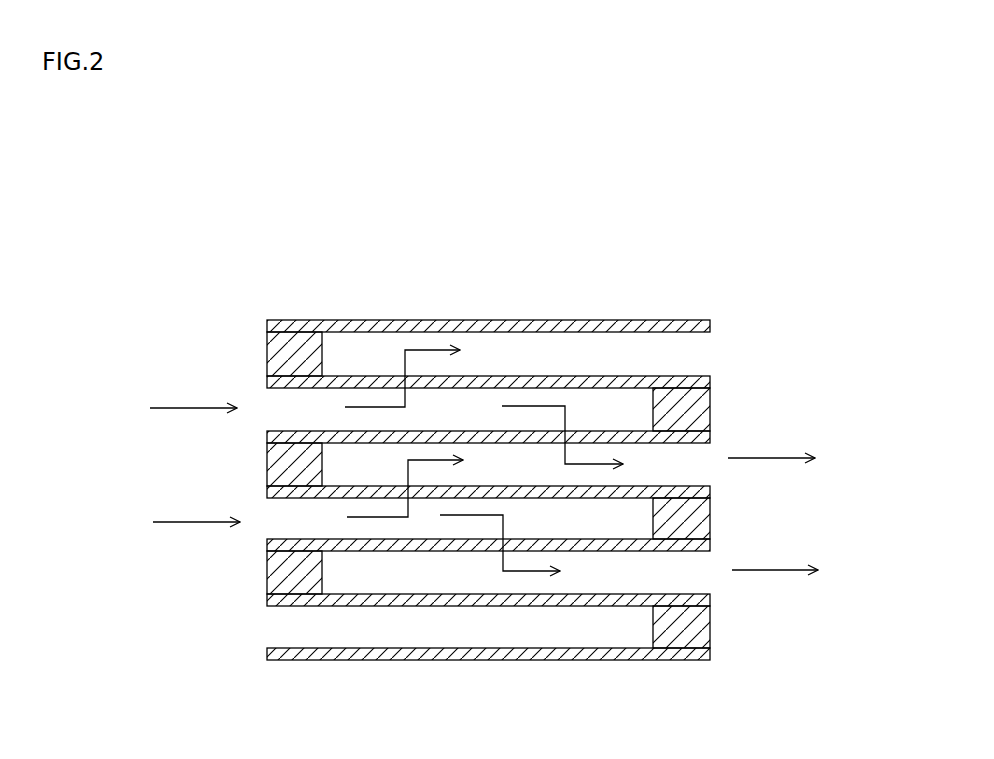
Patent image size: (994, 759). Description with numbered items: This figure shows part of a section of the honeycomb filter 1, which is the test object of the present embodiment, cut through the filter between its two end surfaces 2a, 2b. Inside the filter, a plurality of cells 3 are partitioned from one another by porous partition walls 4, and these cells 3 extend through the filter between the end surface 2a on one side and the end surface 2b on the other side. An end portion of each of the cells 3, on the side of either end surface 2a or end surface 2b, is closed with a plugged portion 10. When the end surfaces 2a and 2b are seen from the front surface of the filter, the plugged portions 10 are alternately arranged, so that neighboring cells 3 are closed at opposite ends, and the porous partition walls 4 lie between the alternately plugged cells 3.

The honeycomb filter 1 is at (724, 132).
The end surface 2a is at (268, 318).
The end surface 2b is at (708, 318).
The cells 3 is at (378, 581).
The porous partition walls 4 is at (652, 381).
The plugged portion 10 is at (290, 352).